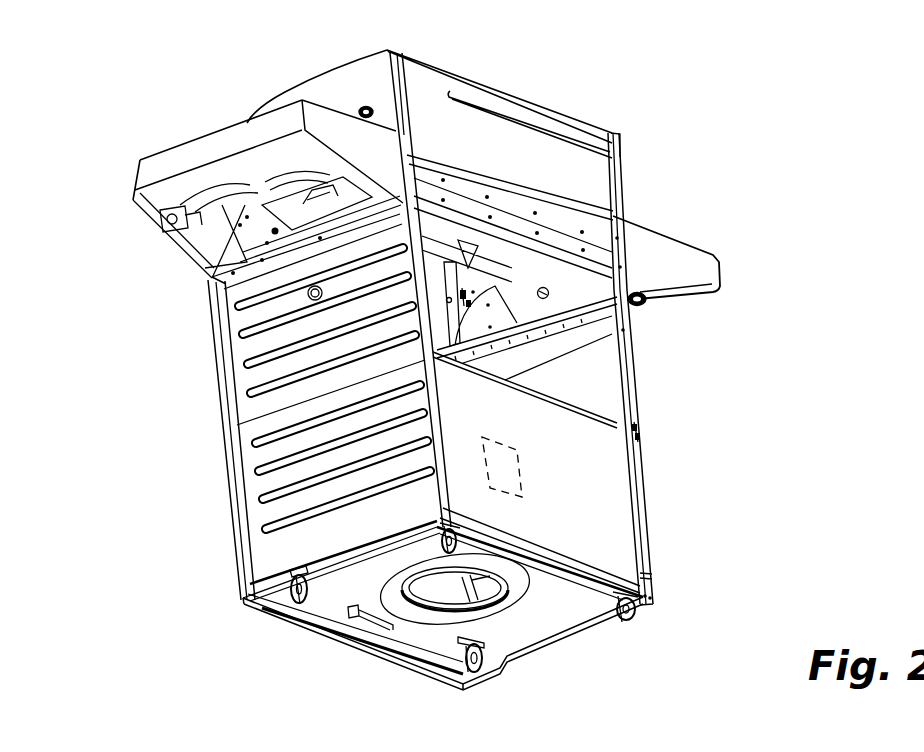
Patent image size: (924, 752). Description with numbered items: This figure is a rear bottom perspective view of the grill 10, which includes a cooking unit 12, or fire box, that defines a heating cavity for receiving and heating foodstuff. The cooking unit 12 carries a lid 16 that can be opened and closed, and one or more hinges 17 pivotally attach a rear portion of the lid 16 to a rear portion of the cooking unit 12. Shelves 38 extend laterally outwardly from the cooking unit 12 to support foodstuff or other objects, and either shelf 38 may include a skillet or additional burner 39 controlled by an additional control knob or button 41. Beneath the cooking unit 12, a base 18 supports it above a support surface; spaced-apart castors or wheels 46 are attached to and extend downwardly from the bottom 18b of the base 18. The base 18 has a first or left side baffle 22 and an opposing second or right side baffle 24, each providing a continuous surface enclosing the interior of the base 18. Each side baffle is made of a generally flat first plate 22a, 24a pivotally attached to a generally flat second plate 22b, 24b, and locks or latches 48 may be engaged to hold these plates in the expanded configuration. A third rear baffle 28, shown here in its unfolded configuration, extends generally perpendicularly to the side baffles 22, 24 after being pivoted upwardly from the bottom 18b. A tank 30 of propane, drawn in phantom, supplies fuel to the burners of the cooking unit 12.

The grill 10 is at (621, 62).
The cooking unit 12 is at (650, 148).
The lid 16 is at (356, 71).
The hinge 17 is at (360, 111).
The base 18 is at (832, 367).
The bottom of the base 18b is at (347, 587).
The first side baffle 22 is at (768, 340).
The first plate 22a is at (628, 366).
The second plate 22b is at (644, 522).
The second side baffle 24 is at (132, 328).
The first plate 24a is at (237, 357).
The second plate 24b is at (257, 488).
The third rear baffle 28 is at (612, 484).
The tank 30 is at (523, 473).
The shelf 38 is at (108, 180).
The skillet or additional burner 39 is at (213, 268).
The control knob or button 41 is at (158, 236).
The castor or wheel 46 is at (294, 605).
The lock or latch 48 is at (490, 297).